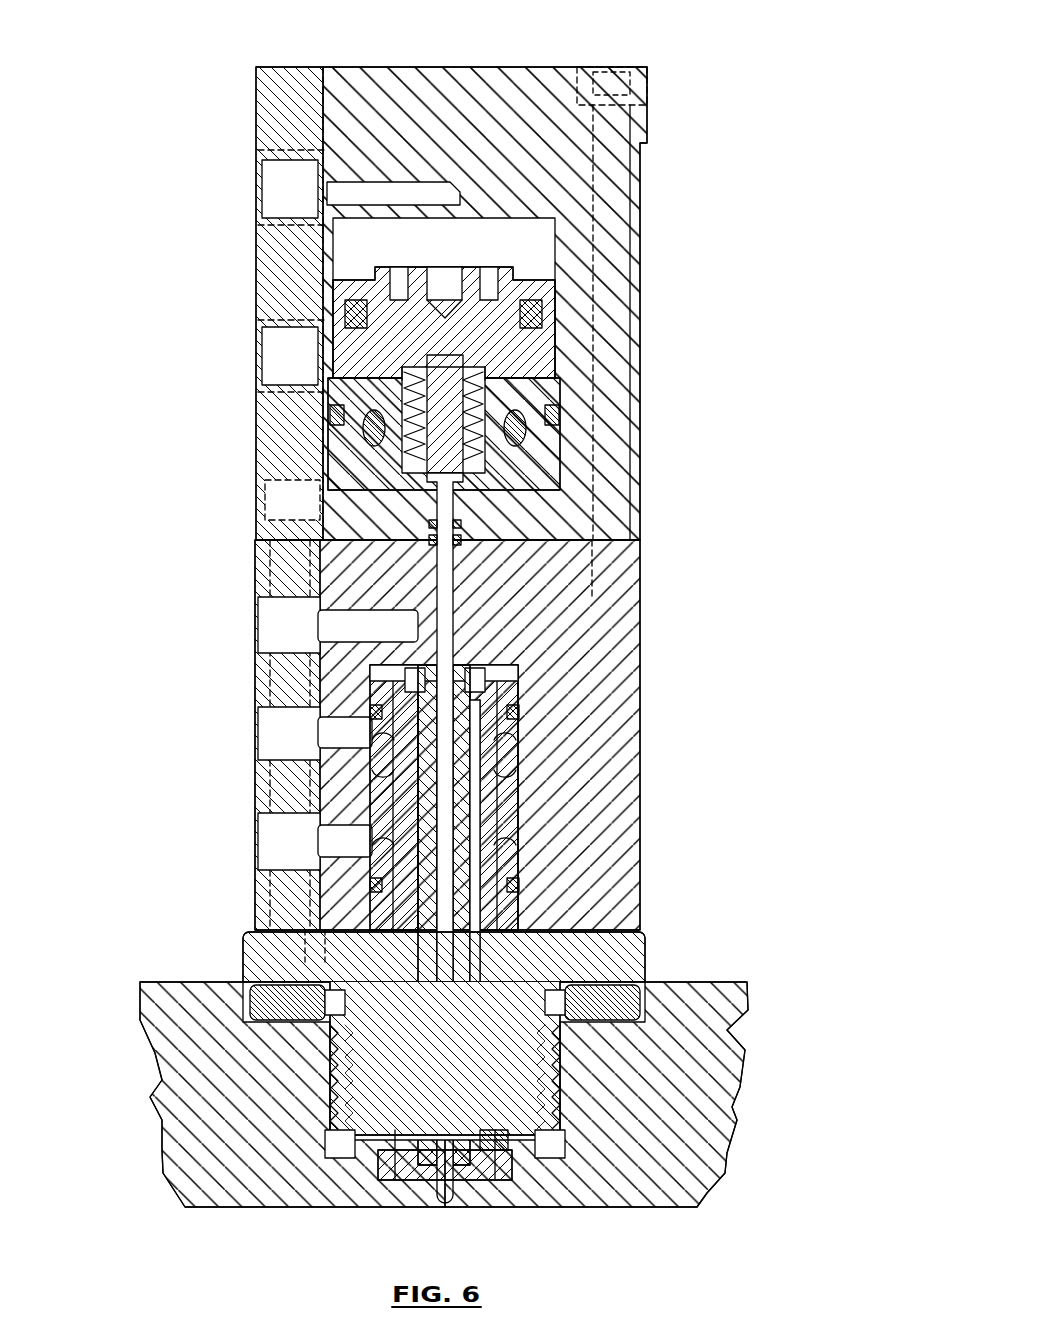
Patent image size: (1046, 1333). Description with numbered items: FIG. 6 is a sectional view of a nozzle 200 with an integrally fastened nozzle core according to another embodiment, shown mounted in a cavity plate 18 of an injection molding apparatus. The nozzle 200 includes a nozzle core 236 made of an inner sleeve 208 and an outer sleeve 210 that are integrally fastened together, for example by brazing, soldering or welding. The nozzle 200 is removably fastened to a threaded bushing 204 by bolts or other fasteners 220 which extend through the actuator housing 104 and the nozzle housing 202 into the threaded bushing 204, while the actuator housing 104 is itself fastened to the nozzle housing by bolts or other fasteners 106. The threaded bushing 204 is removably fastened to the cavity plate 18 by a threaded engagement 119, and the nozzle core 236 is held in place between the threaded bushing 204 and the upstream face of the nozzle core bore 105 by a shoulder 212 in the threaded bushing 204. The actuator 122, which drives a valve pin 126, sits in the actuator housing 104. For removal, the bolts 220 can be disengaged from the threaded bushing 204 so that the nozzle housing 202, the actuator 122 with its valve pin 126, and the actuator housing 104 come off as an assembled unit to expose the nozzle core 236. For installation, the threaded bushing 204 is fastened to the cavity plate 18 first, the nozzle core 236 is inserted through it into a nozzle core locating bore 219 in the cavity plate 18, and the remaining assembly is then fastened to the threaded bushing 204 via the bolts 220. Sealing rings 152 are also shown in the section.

The nozzle 200 is at (760, 118).
The fasteners 106 is at (625, 262).
The actuator 122 is at (565, 350).
The actuator housing 104 is at (640, 402).
The fasteners 220 is at (262, 585).
The valve pin 126 is at (445, 648).
The nozzle housing 202 is at (635, 690).
The nozzle core bore 105 is at (380, 800).
The nozzle core 236 is at (545, 815).
The inner sleeve 208 is at (490, 870).
The outer sleeve 210 is at (510, 910).
The threaded bushing 204 is at (625, 955).
The o-ring 152 is at (268, 1000).
The cavity plate 18 is at (150, 1040).
The threaded engagement 119 is at (545, 1060).
The nozzle core locating bore 219 is at (382, 1180).
The shoulder 212 is at (520, 1175).